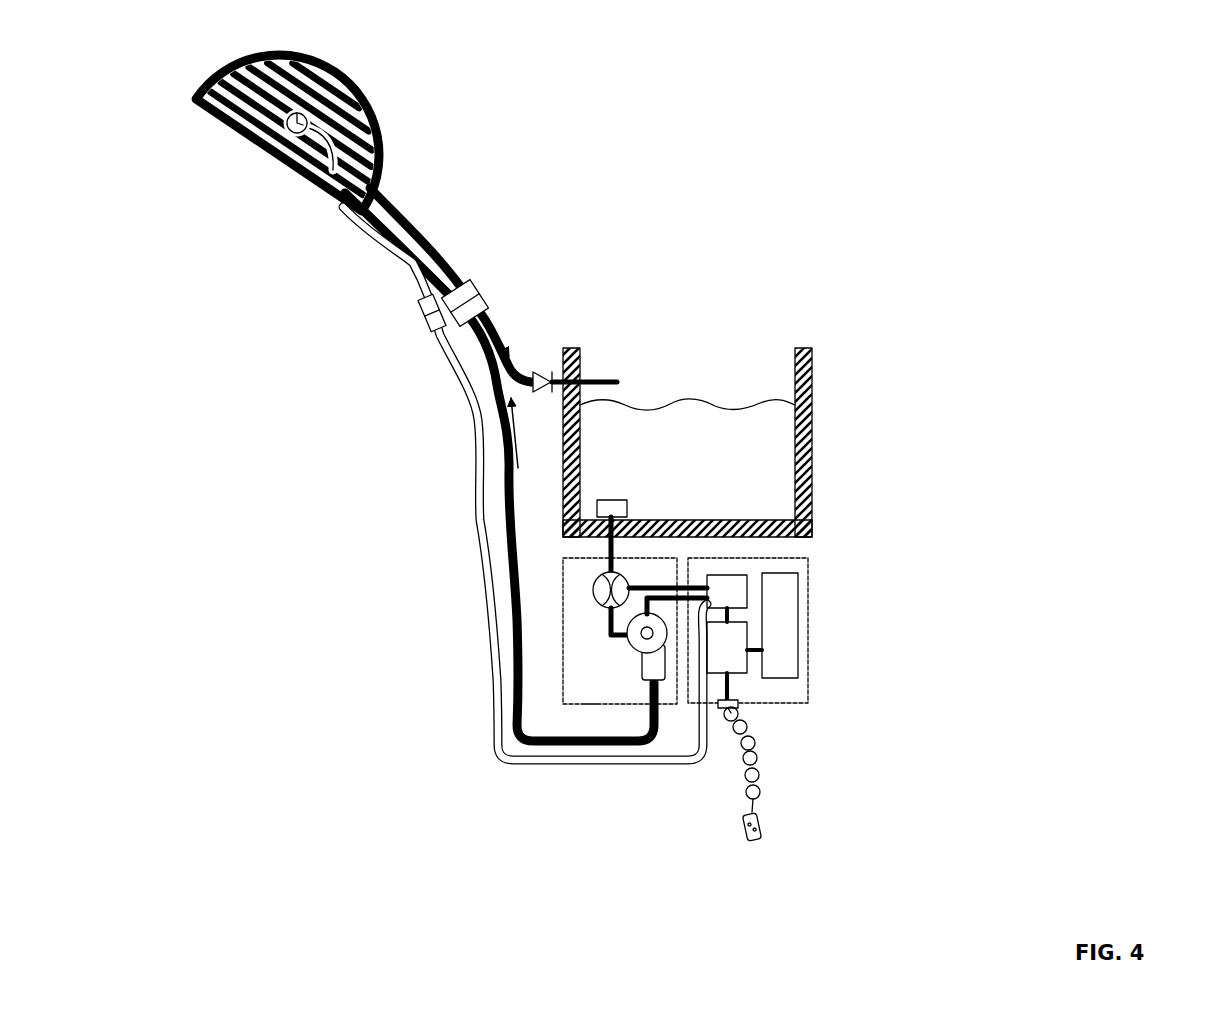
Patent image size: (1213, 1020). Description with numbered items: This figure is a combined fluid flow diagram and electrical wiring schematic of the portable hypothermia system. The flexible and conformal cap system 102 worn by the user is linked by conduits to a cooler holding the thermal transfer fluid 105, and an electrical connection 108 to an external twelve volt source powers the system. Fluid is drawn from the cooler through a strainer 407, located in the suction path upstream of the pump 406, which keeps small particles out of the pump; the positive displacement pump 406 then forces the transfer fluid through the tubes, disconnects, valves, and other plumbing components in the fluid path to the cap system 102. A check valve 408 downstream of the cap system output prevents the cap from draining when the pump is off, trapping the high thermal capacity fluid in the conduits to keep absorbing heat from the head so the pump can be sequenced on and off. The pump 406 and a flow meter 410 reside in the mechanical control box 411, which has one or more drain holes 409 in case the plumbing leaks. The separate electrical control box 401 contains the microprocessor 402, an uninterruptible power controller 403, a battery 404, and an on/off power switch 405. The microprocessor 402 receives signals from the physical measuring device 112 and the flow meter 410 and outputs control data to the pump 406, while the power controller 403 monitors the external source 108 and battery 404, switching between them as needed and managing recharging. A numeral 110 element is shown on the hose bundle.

The cap system 102 is at (290, 212).
The thermal transfer fluid 105 is at (680, 398).
The electrical connection 108 is at (757, 770).
The hose 110 is at (425, 225).
The physical measuring device 112 is at (328, 80).
The electrical control box 401 is at (772, 692).
The microprocessor 402 is at (732, 595).
The uninterruptible power controller 403 is at (727, 638).
The battery 404 is at (783, 657).
The on/off power switch 405 is at (718, 712).
The pump 406 is at (638, 652).
The strainer 407 is at (593, 505).
The check valve 408 is at (542, 372).
The drain holes 409 is at (585, 712).
The flow meter 410 is at (592, 588).
The mechanical control box 411 is at (563, 633).